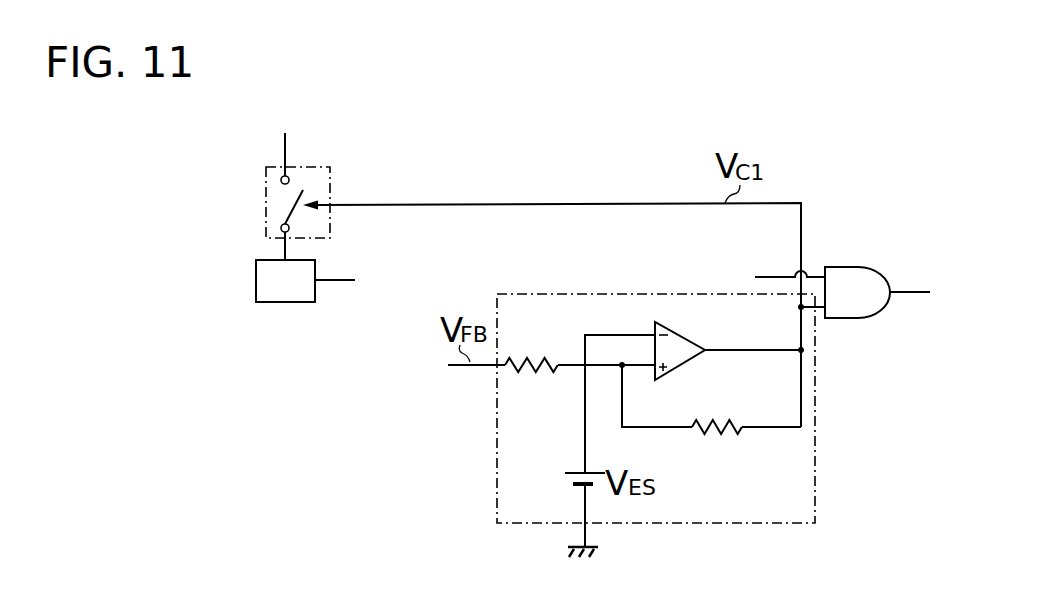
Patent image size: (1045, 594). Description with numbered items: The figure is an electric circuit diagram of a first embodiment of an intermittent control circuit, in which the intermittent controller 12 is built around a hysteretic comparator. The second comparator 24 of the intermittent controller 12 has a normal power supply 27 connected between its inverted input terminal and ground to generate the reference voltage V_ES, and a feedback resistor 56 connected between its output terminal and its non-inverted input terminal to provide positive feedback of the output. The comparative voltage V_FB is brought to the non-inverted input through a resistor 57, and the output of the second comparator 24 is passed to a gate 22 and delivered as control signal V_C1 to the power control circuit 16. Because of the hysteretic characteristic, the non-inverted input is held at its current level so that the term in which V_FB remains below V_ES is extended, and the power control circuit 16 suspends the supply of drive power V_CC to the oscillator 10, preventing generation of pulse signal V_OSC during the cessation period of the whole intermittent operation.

The oscillator 10 is at (285, 302).
The intermittent controller 12 is at (815, 452).
The power control circuit 16 is at (330, 180).
The AND gate 22 is at (847, 267).
The second comparator 24 is at (688, 337).
The normal power supply 27 is at (578, 473).
The feedback resistor 56 is at (727, 430).
The input resistor 57 is at (542, 344).